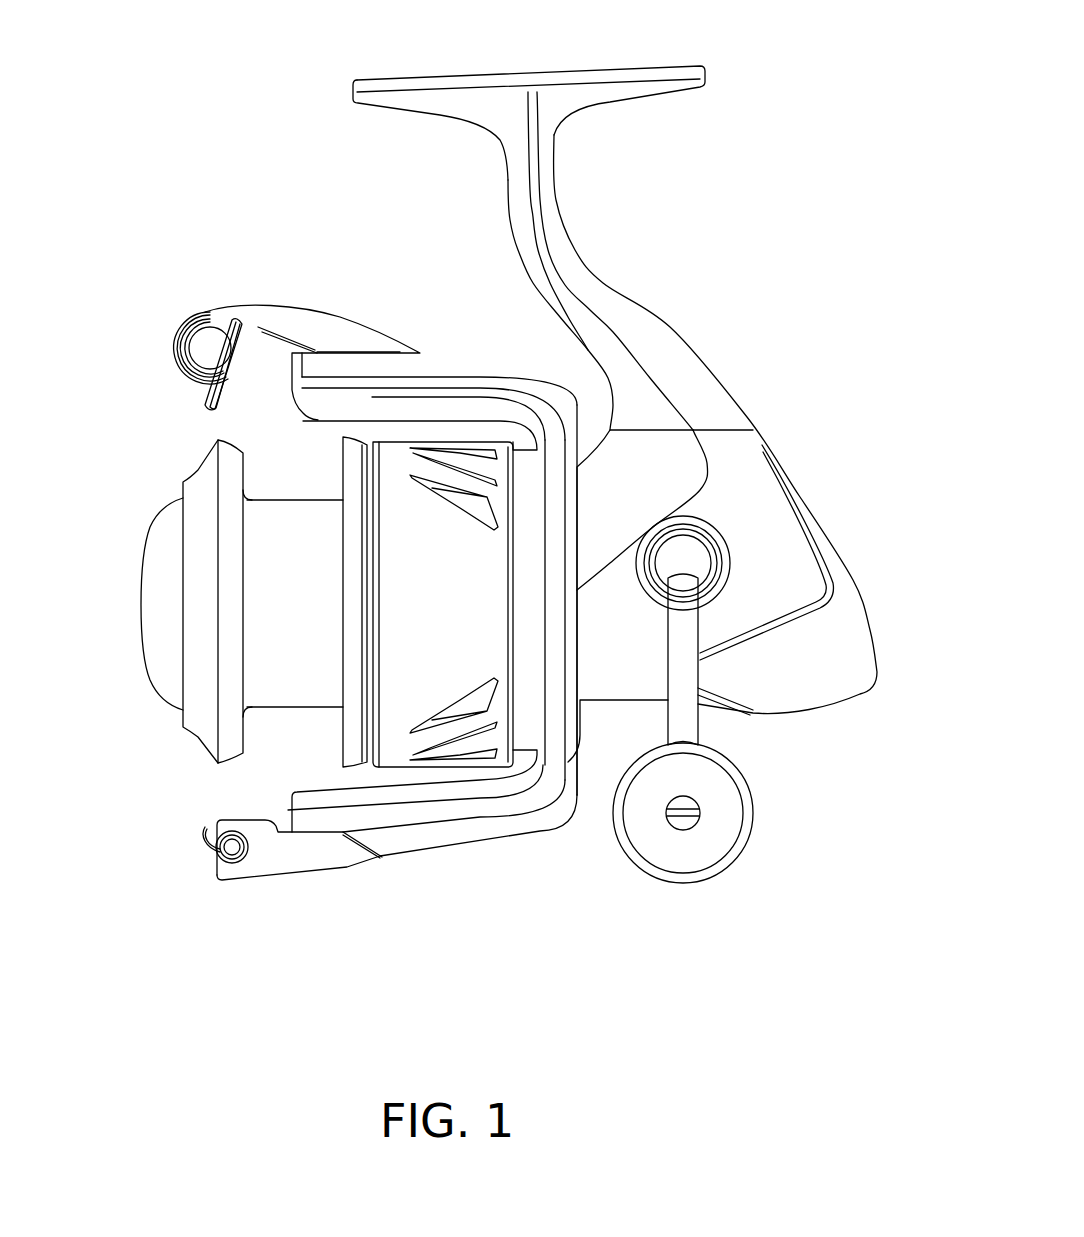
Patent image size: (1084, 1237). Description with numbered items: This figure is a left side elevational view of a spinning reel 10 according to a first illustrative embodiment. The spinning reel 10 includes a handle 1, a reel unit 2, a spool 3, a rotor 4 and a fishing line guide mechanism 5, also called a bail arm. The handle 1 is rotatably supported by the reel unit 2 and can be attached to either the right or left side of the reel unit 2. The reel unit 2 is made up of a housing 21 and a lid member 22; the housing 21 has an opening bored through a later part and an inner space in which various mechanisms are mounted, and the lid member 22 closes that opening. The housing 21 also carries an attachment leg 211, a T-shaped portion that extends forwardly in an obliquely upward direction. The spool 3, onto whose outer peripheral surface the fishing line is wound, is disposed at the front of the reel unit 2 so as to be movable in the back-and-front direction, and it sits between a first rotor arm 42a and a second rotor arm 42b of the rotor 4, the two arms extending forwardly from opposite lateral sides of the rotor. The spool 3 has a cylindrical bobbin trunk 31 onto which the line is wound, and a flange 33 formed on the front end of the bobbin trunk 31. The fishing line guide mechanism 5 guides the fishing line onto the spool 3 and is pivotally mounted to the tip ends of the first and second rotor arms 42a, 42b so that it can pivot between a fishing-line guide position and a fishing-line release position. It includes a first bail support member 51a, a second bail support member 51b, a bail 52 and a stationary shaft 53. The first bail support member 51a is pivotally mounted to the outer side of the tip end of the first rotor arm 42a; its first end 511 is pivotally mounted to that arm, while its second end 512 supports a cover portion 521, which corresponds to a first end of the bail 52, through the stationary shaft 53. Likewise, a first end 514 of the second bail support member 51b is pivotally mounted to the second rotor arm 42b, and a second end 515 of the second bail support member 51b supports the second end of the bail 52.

The spinning reel 10 is at (786, 108).
The handle 1 is at (710, 736).
The reel unit 2 is at (672, 327).
The housing 21 is at (772, 445).
The lid member 22 is at (671, 458).
The attachment leg 211 is at (603, 287).
The spool 3 is at (298, 495).
The bobbin trunk 31 is at (343, 497).
The flange 33 is at (253, 487).
The rotor 4 is at (448, 352).
The first rotor arm 42a is at (498, 374).
The second rotor arm 42b is at (466, 843).
The fishing line guide mechanism 5 is at (190, 242).
The first bail support member 51a is at (297, 314).
The second bail support member 51b is at (383, 901).
The first end 511 is at (381, 347).
The second end 512 is at (215, 306).
The first end 514 is at (343, 857).
The second end 515 is at (219, 898).
The bail 52 is at (204, 403).
The cover portion 521 is at (183, 354).
The stationary shaft 53 is at (200, 340).